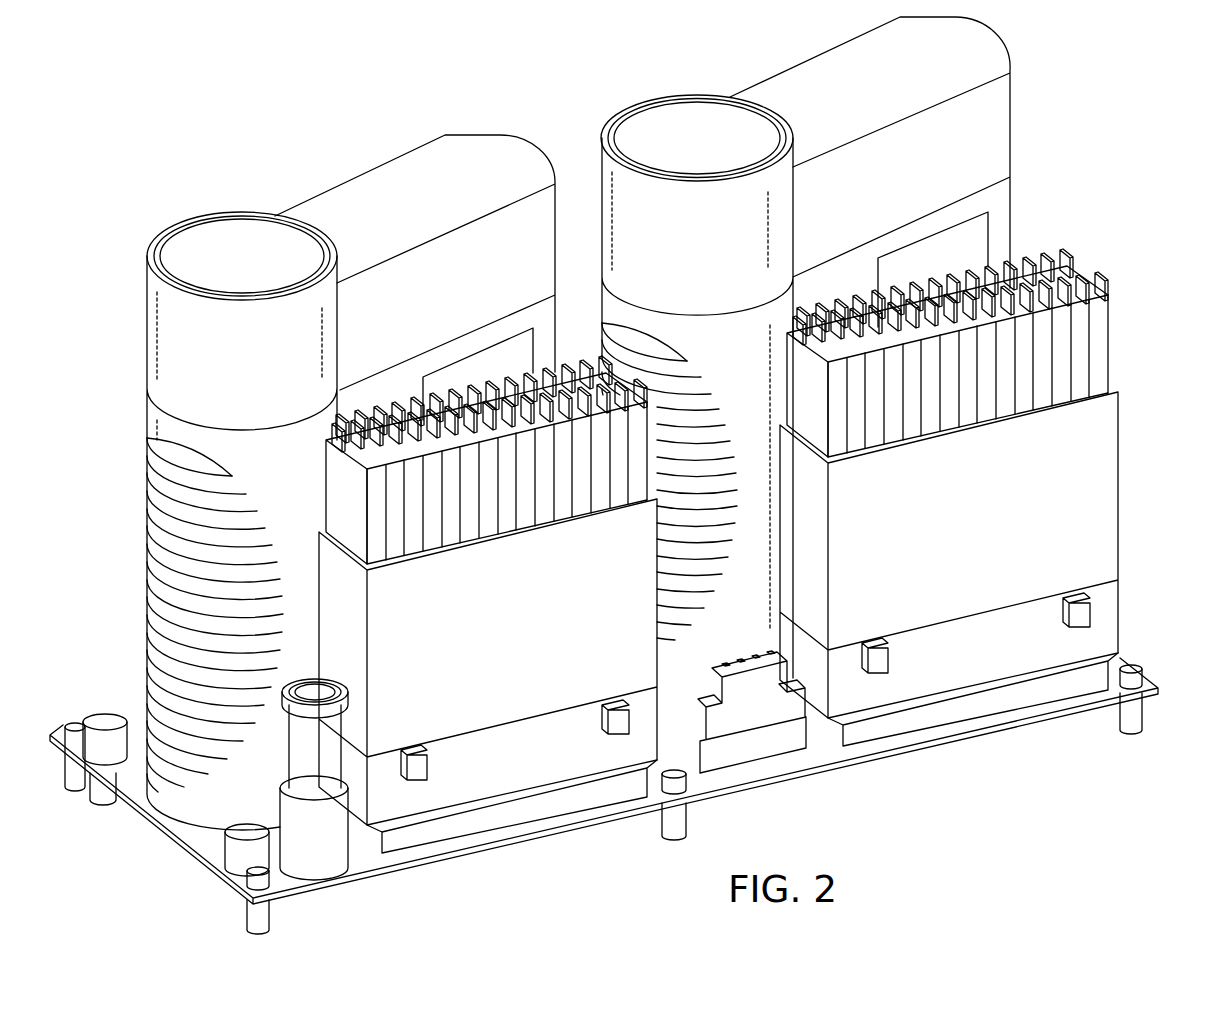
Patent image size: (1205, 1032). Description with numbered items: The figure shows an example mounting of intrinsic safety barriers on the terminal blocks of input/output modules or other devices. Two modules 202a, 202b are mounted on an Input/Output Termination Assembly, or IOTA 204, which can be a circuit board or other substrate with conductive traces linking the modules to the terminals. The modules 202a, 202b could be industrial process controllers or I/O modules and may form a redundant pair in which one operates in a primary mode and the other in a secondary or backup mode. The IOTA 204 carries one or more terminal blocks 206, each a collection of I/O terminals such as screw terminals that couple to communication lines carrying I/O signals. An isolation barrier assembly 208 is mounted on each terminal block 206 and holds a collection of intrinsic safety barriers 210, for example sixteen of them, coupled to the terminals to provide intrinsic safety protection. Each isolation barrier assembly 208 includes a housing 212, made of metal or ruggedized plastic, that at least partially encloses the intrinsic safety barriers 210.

The module 202a is at (182, 224).
The module 202b is at (638, 104).
The Input/Output Termination Assembly (IOTA) 204 is at (149, 820).
The terminal block 206 is at (527, 767).
The isolation barrier assembly 208 is at (1063, 241).
The intrinsic safety barrier 210 is at (1084, 359).
The housing 212 is at (984, 457).